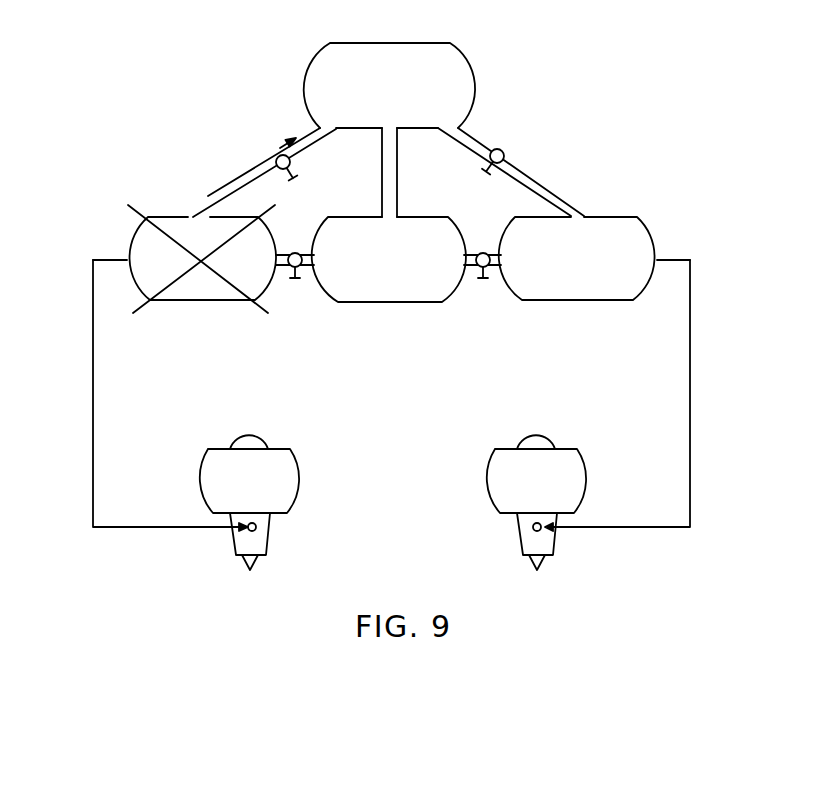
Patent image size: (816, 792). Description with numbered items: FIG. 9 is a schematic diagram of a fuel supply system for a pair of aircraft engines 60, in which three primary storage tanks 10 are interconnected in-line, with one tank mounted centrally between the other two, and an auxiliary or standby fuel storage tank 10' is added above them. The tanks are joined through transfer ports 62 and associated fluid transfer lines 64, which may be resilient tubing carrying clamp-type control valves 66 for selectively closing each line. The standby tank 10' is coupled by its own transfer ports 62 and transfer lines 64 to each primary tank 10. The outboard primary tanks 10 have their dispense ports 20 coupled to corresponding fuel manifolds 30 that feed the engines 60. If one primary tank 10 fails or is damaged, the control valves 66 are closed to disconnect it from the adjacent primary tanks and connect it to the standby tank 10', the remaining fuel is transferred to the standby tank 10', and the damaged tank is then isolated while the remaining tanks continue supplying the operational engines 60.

The primary fuel storage tank 10 is at (392, 269).
The standby fuel storage tank 10' is at (417, 81).
The dispense port 20 is at (127, 258).
The fuel manifold 30 is at (93, 480).
The engine 60 is at (299, 482).
The transfer port 62 is at (320, 128).
The fluid transfer line 64 is at (305, 149).
The control valve 66 is at (281, 170).